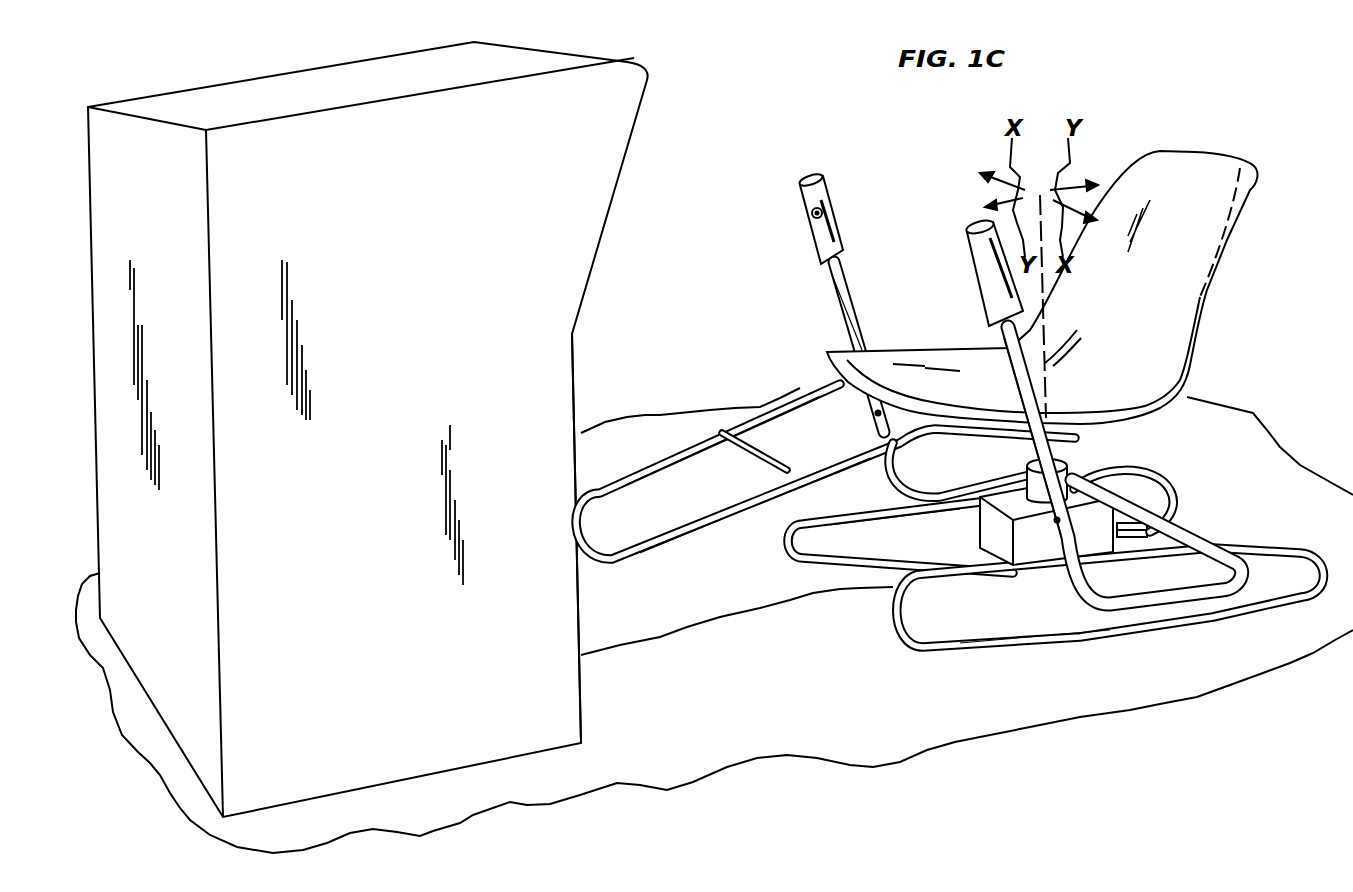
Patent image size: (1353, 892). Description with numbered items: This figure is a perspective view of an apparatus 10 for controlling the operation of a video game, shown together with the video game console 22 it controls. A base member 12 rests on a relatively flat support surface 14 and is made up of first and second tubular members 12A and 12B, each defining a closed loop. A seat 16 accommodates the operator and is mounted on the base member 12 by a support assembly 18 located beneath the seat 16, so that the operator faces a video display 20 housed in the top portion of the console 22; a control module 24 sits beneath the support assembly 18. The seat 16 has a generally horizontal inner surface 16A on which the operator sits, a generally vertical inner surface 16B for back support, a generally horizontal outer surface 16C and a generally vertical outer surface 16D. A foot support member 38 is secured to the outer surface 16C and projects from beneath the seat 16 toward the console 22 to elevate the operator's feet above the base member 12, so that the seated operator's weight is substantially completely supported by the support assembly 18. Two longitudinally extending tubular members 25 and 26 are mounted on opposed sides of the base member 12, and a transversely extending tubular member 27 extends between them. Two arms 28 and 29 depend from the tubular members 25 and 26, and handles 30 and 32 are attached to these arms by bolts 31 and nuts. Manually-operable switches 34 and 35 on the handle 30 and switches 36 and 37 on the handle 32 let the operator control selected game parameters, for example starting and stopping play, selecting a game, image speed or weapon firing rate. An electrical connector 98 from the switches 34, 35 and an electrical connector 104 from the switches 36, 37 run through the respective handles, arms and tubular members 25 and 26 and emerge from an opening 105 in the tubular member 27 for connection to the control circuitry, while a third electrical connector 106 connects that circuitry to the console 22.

The apparatus 10 is at (1166, 89).
The base member 12 is at (1056, 584).
The first tubular member 12A is at (862, 549).
The second tubular member 12B is at (900, 618).
The support surface 14 is at (1253, 655).
The seat 16 is at (1081, 301).
The inner surface 16A is at (903, 372).
The inner surface 16B is at (1170, 310).
The outer surface 16C is at (1173, 407).
The outer surface 16D is at (1223, 253).
The support assembly 18 is at (1070, 465).
The video display 20 is at (628, 148).
The video game console 22 is at (453, 316).
The control module 24 is at (1093, 483).
The tubular member 25 is at (973, 483).
The tubular member 26 is at (1183, 597).
The tubular member 27 is at (1217, 537).
The arm 28 is at (825, 494).
The arm 29 is at (1080, 587).
The handle 30 is at (819, 203).
The bolt 31 is at (873, 415).
The handle 32 is at (1069, 395).
The switch 34 is at (807, 175).
The switch 35 is at (823, 213).
The switch 36 is at (970, 216).
The switch 37 is at (973, 264).
The foot support member 38 is at (687, 533).
The electrical connector 98 is at (1147, 507).
The electrical connector 104 is at (1130, 540).
The opening 105 is at (1170, 509).
The electrical connector 106 is at (760, 610).